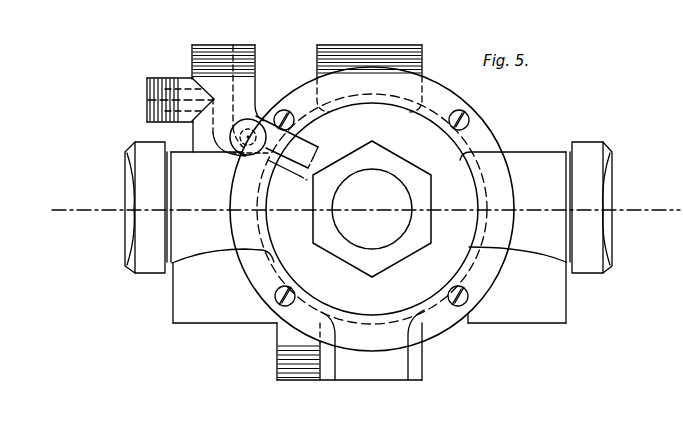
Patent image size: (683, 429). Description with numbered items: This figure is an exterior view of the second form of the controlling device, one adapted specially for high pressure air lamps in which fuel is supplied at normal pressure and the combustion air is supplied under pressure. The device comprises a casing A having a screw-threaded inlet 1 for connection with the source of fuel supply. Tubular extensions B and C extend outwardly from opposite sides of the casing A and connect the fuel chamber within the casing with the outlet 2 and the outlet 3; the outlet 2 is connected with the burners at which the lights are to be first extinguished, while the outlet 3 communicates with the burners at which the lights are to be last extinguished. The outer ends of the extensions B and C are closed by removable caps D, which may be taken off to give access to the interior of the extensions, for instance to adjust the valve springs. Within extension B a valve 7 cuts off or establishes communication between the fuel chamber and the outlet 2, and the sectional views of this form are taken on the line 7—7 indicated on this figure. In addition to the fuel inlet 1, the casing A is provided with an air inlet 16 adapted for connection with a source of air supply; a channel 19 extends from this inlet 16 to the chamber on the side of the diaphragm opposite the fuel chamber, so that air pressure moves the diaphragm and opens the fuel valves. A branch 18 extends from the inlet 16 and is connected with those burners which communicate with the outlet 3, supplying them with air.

The inlet 1 is at (420, 61).
The outlet 2 is at (222, 312).
The outlet 3 is at (530, 315).
The valve 7 is at (357, 216).
The inlet 16 is at (231, 50).
The branch 18 is at (158, 98).
The channel 19 is at (252, 147).
The casing A is at (486, 135).
The tubular extension B is at (220, 207).
The tubular extension C is at (515, 207).
The removable cap D is at (138, 243).